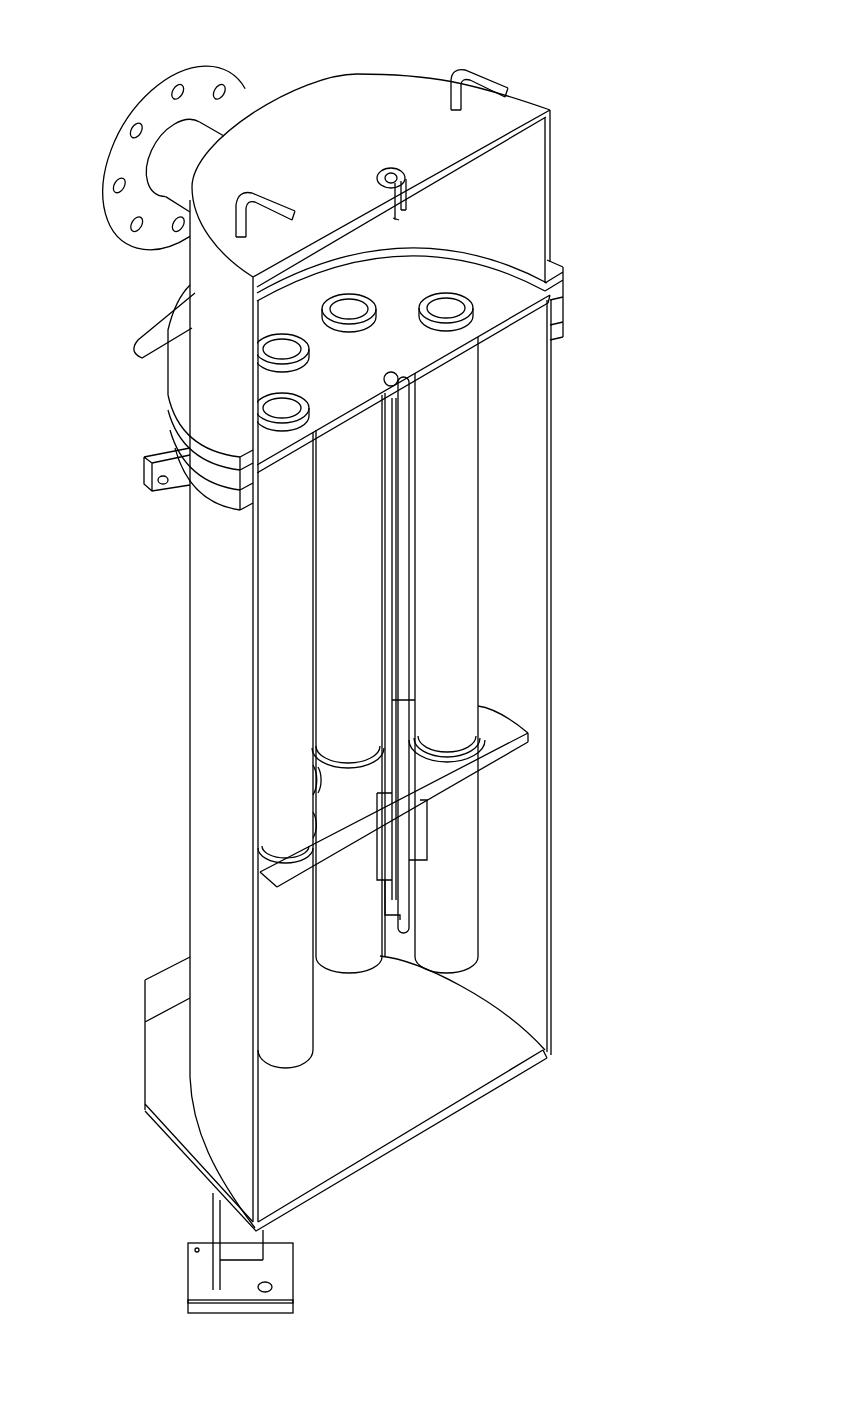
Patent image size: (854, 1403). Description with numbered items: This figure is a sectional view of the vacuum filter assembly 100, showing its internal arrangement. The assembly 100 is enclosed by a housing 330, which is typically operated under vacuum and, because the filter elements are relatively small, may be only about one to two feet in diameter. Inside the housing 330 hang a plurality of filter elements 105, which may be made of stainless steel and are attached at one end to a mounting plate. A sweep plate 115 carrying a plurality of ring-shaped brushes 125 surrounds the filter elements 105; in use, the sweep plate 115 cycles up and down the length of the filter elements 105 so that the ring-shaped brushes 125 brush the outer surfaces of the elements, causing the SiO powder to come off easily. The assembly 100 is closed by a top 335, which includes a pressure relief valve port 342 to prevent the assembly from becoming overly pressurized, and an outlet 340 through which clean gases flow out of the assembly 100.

The vacuum filter assembly 100 is at (605, 358).
The filter elements 105 is at (447, 595).
The sweep plate 115 is at (429, 775).
The ring-shaped brushes 125 is at (490, 742).
The housing 330 is at (193, 744).
The top 335 is at (197, 283).
The outlet 340 is at (223, 70).
The pressure relief valve port 342 is at (393, 172).